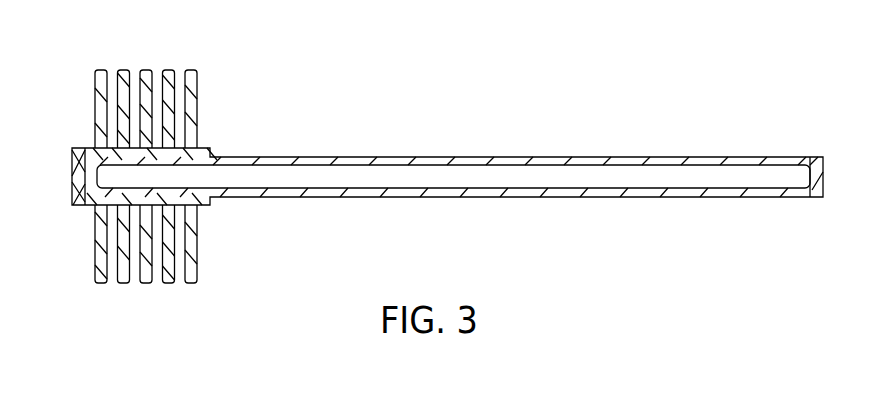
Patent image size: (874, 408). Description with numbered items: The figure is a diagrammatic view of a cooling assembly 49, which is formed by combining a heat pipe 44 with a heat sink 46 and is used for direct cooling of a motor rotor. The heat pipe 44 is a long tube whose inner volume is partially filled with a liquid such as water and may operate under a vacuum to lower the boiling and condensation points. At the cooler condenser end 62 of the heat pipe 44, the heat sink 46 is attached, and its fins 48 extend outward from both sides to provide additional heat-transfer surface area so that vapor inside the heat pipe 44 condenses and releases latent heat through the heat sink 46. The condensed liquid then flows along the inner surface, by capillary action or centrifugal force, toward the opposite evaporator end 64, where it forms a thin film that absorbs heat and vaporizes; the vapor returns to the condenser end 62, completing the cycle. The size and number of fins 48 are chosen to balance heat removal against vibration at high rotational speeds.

The heat pipe 44 is at (470, 197).
The heat sink 46 is at (73, 198).
The fins 48 is at (145, 70).
The cooling assembly 49 is at (713, 98).
The condenser end 62 is at (103, 167).
The evaporator end 64 is at (803, 176).